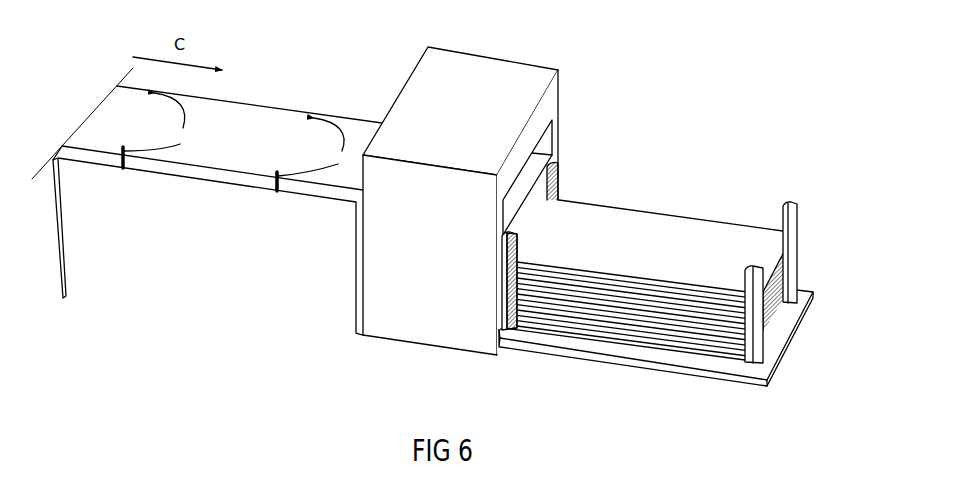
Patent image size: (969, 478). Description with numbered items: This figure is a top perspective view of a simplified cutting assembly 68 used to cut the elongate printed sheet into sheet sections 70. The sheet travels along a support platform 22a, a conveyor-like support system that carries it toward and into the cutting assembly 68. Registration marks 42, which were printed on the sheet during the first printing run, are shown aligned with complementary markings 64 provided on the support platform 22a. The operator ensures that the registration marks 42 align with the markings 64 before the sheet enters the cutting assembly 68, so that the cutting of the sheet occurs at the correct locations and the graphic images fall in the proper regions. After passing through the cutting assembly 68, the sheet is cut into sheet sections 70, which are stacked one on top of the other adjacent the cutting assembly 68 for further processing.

The support platform 22a is at (64, 236).
The registration marks 42 is at (243, 134).
The markings 64 is at (121, 161).
The cutting assembly 68 is at (577, 82).
The sheet sections 70 is at (684, 212).